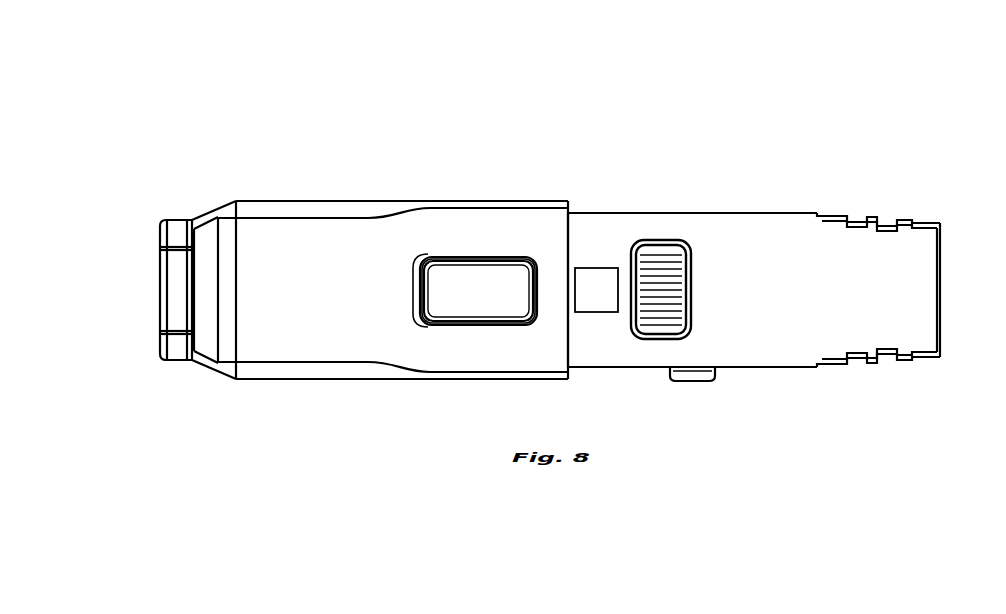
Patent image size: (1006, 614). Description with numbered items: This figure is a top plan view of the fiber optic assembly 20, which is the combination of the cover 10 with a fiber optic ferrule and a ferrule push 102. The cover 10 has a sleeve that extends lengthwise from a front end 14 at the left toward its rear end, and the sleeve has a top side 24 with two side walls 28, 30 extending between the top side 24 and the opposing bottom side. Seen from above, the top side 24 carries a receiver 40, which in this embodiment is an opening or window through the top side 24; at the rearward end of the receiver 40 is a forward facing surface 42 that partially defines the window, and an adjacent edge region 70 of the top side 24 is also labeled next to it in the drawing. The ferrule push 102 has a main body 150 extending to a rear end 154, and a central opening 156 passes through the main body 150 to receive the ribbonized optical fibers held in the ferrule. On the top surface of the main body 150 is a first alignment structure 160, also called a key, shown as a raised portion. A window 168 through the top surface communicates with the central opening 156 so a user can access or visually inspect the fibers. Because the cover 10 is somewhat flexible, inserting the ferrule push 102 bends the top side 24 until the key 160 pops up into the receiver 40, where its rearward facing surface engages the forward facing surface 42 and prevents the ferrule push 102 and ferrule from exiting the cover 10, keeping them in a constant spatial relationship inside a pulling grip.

The cover 10 is at (300, 156).
The front end 14 is at (159, 293).
The fiber optic assembly 20 is at (614, 88).
The top side 24 is at (393, 290).
The side wall 28 is at (349, 380).
The side wall 30 is at (353, 200).
The receiver 40 is at (418, 282).
The forward facing surface 42 is at (533, 263).
The button face 70 is at (531, 292).
The ferrule push 102 is at (797, 374).
The main body 150 is at (872, 260).
The rear end 154 is at (943, 278).
The central opening 156 is at (663, 248).
The first alignment structure 160 is at (478, 291).
The window 168 is at (690, 322).